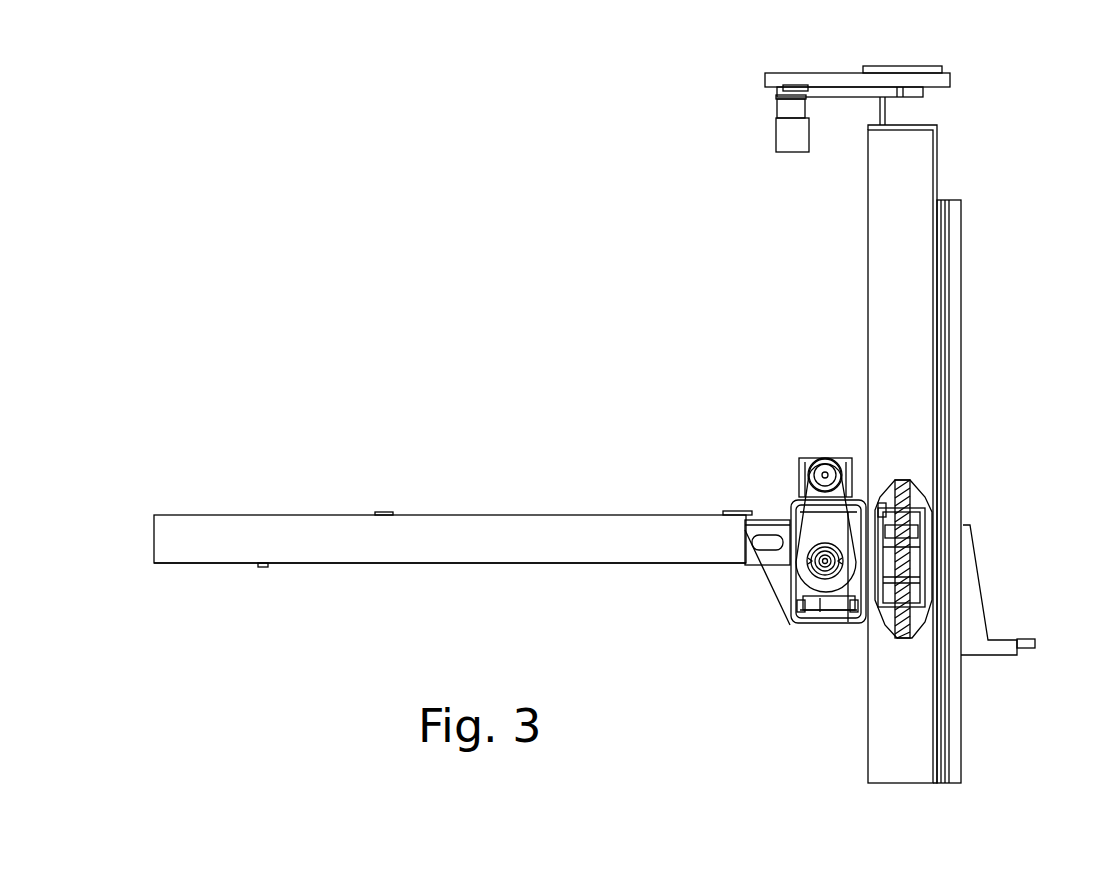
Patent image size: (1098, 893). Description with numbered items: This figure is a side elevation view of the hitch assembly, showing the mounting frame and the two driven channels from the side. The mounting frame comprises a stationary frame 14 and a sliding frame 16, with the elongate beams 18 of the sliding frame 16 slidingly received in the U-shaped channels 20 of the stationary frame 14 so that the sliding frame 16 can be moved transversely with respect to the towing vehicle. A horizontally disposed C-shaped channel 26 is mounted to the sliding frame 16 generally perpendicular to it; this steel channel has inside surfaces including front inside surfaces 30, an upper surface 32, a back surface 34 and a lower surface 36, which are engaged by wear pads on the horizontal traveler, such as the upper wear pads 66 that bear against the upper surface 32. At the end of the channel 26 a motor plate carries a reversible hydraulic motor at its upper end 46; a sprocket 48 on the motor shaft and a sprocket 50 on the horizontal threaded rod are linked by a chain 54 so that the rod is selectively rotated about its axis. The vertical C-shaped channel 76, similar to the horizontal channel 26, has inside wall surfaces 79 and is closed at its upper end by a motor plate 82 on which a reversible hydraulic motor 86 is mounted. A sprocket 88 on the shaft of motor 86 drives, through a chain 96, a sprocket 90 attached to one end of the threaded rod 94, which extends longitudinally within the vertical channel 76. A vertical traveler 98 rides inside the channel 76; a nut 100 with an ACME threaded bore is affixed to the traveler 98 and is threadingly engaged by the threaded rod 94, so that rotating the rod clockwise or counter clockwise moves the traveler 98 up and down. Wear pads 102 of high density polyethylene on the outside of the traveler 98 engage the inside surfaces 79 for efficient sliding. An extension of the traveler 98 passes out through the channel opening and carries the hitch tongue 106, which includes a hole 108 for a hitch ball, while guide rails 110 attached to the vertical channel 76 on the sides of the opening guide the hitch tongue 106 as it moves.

The stationary frame 14 is at (453, 502).
The sliding frame 16 is at (640, 515).
The elongate beams 18 is at (805, 566).
The U-shaped channels 20 is at (383, 552).
The C-shaped channel 26 is at (793, 625).
The front inside surfaces 30 is at (848, 465).
The upper surface 32 is at (812, 505).
The back surface 34 is at (820, 617).
The lower surface 36 is at (752, 600).
The upper end 46 is at (822, 455).
The sprocket 48 is at (818, 470).
The sprocket 50 is at (797, 588).
The chain 54 is at (800, 488).
The upper wear pads 66 is at (793, 608).
The vertical C-shaped channel 76 is at (884, 228).
The inside wall surfaces 79 is at (872, 500).
The motor plate 82 is at (842, 97).
The reversible hydraulic motor 86 is at (787, 138).
The sprocket 88 is at (797, 86).
The sprocket 90 is at (910, 68).
The threaded rod 94 is at (918, 492).
The chain 96 is at (836, 78).
The vertical traveler 98 is at (920, 632).
The nut 100 is at (920, 525).
The wear pads 102 is at (928, 553).
The hitch tongue 106 is at (975, 594).
The hole 108 is at (1023, 648).
The guide rails 110 is at (955, 300).